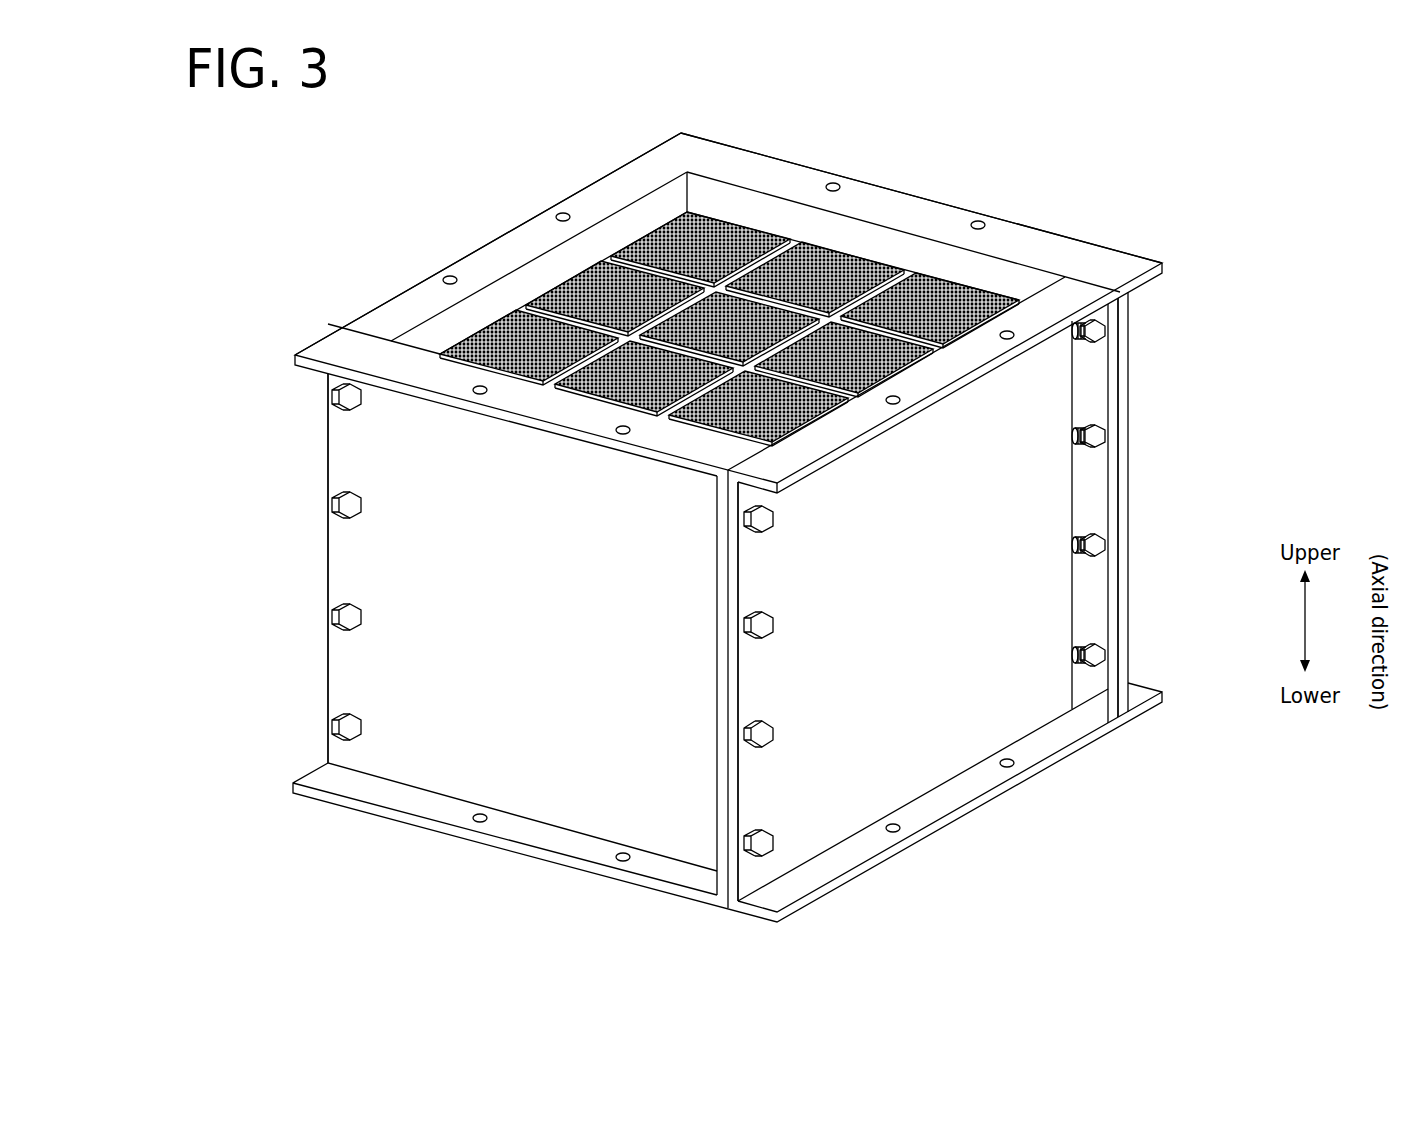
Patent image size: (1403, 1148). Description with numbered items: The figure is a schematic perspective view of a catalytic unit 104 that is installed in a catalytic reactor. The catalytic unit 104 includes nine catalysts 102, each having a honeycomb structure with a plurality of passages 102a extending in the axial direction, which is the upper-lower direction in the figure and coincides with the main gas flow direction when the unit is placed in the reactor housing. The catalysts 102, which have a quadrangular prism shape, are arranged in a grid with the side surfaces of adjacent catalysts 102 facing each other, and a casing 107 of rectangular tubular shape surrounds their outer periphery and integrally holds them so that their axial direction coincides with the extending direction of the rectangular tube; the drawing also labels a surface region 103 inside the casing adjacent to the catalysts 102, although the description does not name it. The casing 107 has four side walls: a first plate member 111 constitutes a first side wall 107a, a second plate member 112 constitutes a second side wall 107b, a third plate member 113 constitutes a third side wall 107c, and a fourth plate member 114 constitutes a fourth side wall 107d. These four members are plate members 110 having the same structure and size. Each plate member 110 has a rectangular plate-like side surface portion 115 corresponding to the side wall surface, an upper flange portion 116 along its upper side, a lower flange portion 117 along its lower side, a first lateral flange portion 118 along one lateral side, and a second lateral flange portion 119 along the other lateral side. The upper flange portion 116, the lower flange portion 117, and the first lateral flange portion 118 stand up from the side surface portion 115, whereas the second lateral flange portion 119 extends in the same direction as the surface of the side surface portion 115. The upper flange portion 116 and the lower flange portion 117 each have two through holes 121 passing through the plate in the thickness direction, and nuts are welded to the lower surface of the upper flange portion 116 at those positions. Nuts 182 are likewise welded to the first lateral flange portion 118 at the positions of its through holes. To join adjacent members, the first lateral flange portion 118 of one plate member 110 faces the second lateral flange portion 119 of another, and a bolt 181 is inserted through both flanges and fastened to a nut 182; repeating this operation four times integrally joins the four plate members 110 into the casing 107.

The catalyst 102 is at (953, 277).
The passages 102a is at (742, 228).
The support plate 103 is at (957, 262).
The catalytic unit 104 is at (1142, 212).
The casing 107 is at (1182, 320).
The first side wall 107a is at (477, 622).
The second side wall 107b is at (929, 795).
The third side wall 107c is at (921, 209).
The fourth side wall 107d is at (491, 244).
The plate member 110 is at (755, 516).
The first plate member 111 is at (525, 762).
The second plate member 112 is at (890, 752).
The third plate member 113 is at (1134, 478).
The fourth plate member 114 is at (455, 252).
The side surface portion 115 is at (532, 280).
The upper flange portion 116 is at (335, 348).
The lower flange portion 117 is at (1162, 686).
The first lateral flange portion 118 is at (1088, 693).
The second lateral flange portion 119 is at (1125, 515).
The through holes 121 is at (565, 212).
The bolt 181 is at (338, 505).
The nuts 182 is at (1108, 432).